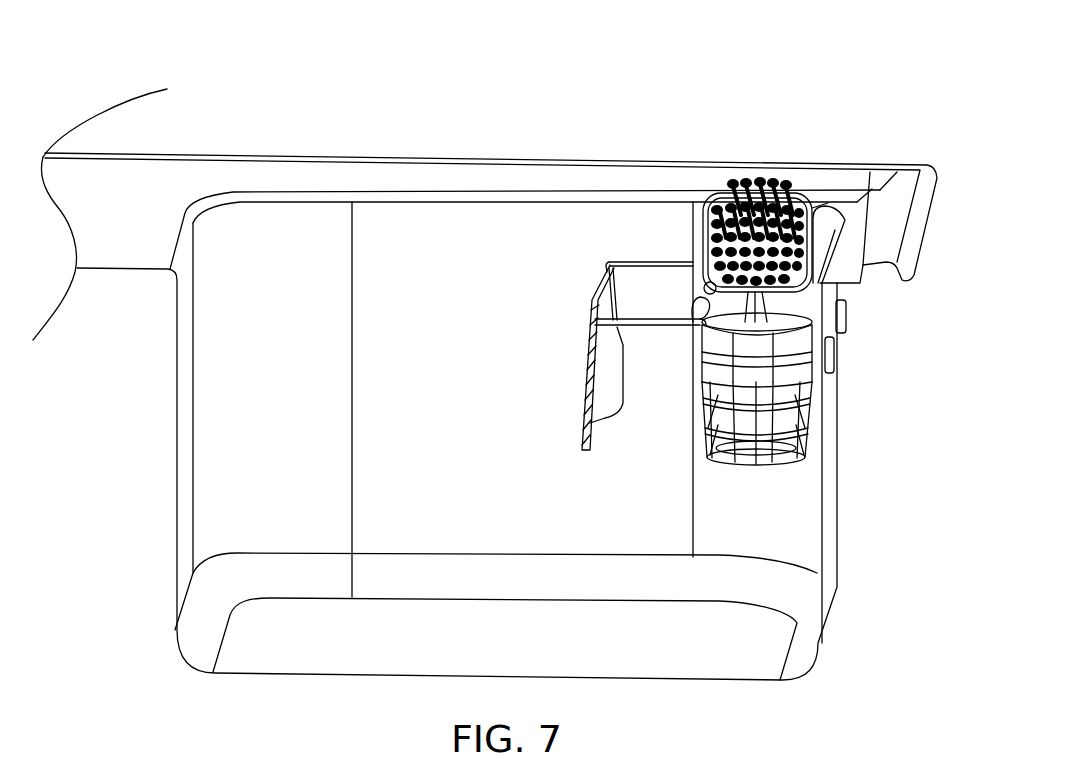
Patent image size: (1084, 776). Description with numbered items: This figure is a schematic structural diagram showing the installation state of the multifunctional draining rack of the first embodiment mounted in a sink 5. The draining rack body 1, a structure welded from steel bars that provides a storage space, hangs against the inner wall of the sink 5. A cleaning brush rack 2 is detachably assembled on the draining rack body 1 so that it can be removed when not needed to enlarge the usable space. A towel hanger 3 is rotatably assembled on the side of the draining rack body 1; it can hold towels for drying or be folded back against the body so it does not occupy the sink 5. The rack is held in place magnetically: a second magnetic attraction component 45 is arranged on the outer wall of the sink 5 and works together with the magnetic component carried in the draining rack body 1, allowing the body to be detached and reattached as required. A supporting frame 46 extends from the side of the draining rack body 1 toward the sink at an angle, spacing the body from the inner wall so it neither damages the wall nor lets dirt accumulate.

The sink 5 is at (484, 258).
The towel hanger 3 is at (633, 325).
The draining rack body 1 is at (713, 432).
The cleaning brush rack 2 is at (790, 372).
The second magnetic attraction component 45 is at (842, 317).
The supporting frame 46 is at (815, 352).